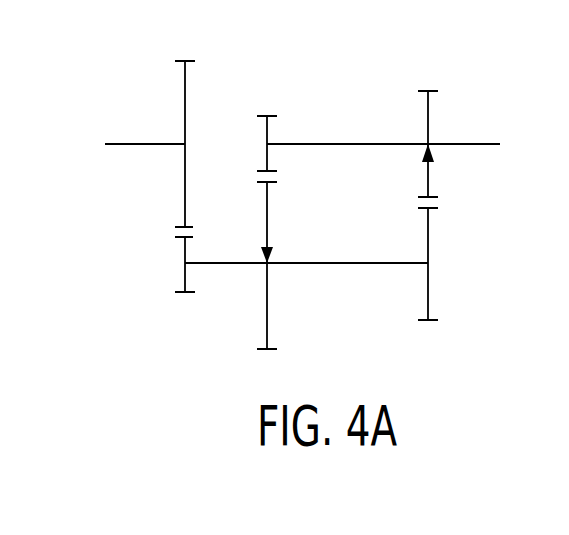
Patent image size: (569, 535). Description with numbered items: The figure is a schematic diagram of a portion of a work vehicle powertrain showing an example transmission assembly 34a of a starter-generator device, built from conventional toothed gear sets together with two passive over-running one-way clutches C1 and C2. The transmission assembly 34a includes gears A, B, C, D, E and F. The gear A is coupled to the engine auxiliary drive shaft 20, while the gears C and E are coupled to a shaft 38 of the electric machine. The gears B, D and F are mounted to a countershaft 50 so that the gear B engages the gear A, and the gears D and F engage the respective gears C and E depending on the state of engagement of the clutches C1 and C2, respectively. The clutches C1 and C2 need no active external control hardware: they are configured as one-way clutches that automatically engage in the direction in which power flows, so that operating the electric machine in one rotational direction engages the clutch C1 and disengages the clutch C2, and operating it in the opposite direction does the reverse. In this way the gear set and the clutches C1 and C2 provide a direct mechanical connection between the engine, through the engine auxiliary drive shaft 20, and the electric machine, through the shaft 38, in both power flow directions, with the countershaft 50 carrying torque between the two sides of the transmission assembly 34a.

The transmission assembly 34a is at (382, 62).
The engine auxiliary drive shaft 20 is at (132, 144).
The shaft of the electric machine 38 is at (500, 144).
The countershaft 50 is at (333, 263).
The gear A is at (185, 112).
The gear B is at (185, 277).
The gear C is at (267, 135).
The gear D is at (267, 327).
The gear E is at (428, 128).
The gear F is at (428, 307).
The first clutch C1 is at (267, 203).
The second clutch C2 is at (428, 177).